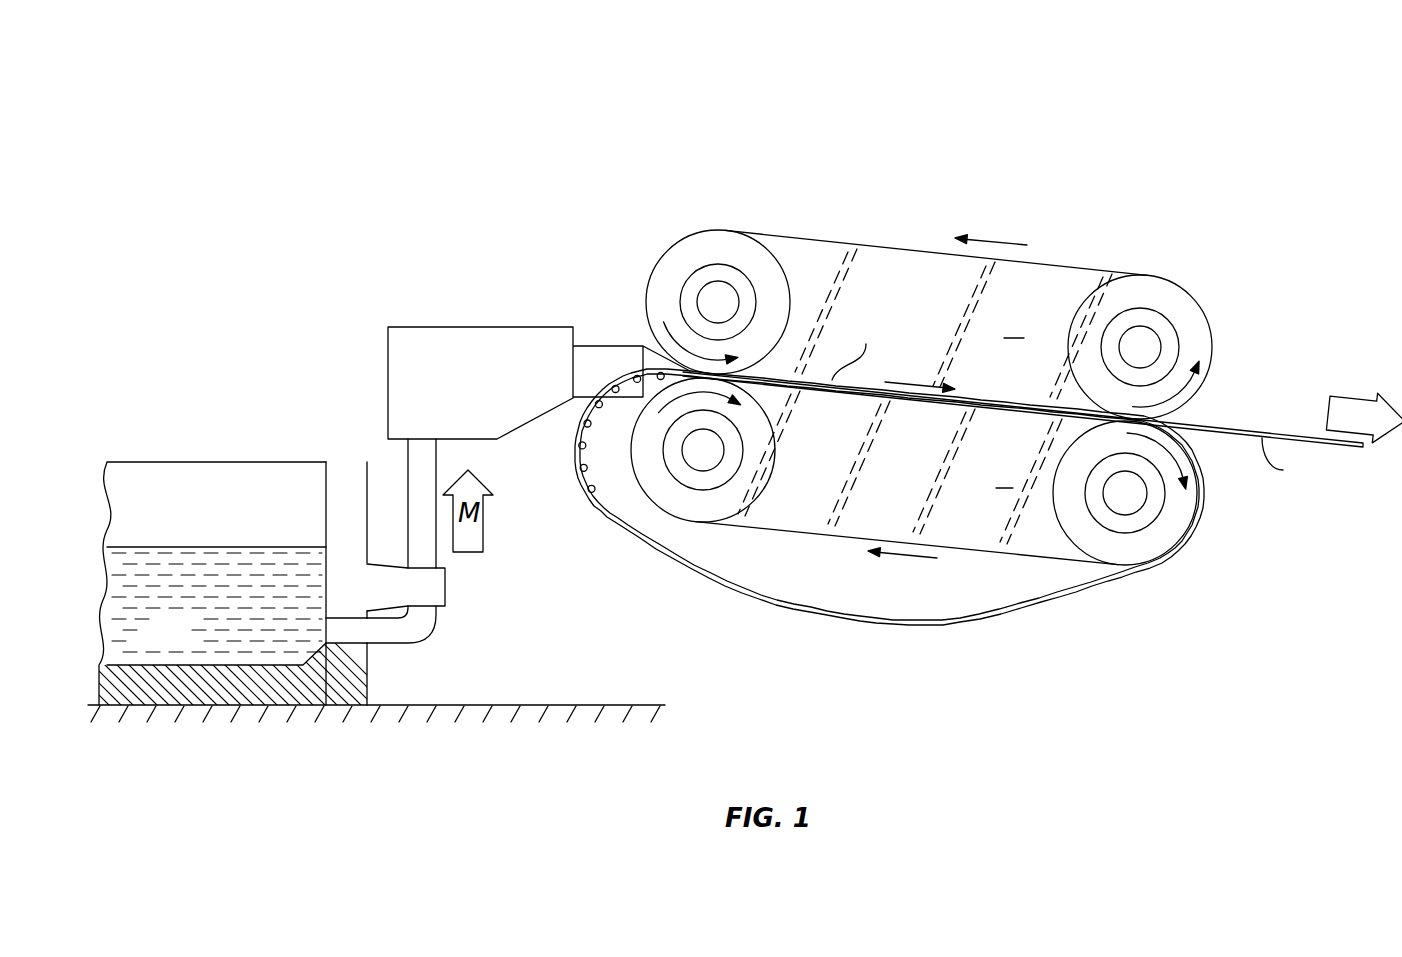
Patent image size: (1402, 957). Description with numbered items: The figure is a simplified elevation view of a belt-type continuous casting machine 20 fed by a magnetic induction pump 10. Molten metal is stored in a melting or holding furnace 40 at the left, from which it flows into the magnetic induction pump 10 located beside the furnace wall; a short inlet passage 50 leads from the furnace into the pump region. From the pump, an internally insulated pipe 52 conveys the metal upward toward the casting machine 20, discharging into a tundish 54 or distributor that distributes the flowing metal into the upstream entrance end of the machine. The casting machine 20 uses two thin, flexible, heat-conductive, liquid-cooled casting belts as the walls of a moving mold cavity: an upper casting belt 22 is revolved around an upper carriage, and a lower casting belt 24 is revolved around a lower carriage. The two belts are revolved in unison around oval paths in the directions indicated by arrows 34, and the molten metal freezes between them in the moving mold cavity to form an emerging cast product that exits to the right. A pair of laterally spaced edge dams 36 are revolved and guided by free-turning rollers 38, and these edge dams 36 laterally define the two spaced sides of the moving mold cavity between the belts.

The magnetic induction pump 10 is at (445, 585).
The belt-type continuous casting machine 20 is at (963, 388).
The upper casting belt 22 is at (872, 248).
The lower casting belt 24 is at (787, 532).
The arrows 34 is at (995, 238).
The edge dams 36 is at (723, 583).
The free-turning rollers 38 is at (597, 485).
The melting or holding furnace 40 is at (250, 433).
The inlet pipe 50 is at (397, 647).
The internally insulated pipe 52 is at (408, 465).
The tundish 54 is at (495, 353).